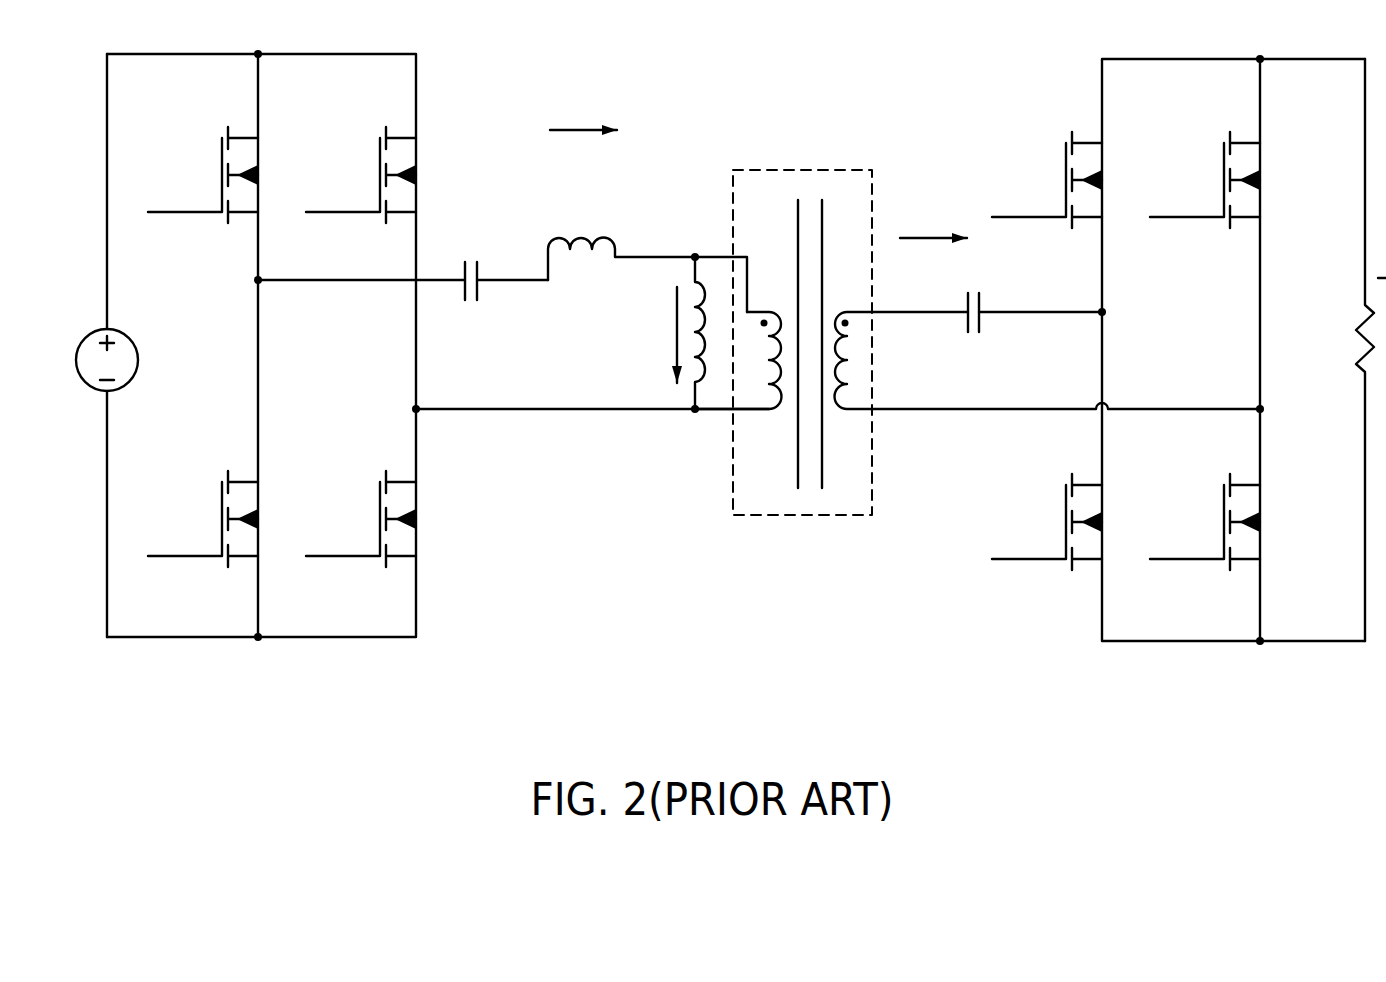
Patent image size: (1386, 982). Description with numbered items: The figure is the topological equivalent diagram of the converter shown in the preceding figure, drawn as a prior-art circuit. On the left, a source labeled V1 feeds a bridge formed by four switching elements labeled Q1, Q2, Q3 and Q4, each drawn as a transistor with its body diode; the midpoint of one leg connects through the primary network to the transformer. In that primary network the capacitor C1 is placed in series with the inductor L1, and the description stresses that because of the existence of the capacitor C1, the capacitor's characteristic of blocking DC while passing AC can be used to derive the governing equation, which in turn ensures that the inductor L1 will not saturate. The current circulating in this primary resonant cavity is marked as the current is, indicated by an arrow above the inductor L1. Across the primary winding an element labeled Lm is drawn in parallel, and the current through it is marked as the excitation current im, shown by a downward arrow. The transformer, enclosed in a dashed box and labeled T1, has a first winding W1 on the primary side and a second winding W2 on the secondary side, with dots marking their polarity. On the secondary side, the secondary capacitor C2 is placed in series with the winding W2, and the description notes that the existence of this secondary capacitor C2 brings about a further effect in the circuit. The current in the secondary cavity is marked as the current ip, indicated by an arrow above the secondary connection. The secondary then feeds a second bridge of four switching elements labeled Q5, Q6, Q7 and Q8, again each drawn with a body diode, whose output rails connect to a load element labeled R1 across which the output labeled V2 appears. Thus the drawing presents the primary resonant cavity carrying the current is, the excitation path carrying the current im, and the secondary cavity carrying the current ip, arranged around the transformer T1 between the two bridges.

The input voltage source V1 is at (82, 345).
The output voltage V2 is at (1351, 171).
The primary-side switch Q1 is at (203, 149).
The primary-side switch Q2 is at (361, 149).
The primary-side switch Q3 is at (203, 494).
The primary-side switch Q4 is at (361, 494).
The secondary-side switch Q5 is at (1047, 151).
The secondary-side switch Q6 is at (1205, 151).
The secondary-side switch Q7 is at (1047, 493).
The secondary-side switch Q8 is at (1205, 493).
The capacitor C1 is at (501, 260).
The secondary capacitor C2 is at (1035, 298).
The inductor L1 is at (621, 239).
The magnetizing inductor Lm is at (719, 333).
The transformer T1 is at (802, 316).
The primary winding W1 is at (738, 360).
The secondary winding W2 is at (1047, 360).
The load resistor R1 is at (1338, 350).
The current in the primary resonant cavity is is at (583, 147).
The current in the secondary cavity ip is at (933, 255).
The excitation current im is at (659, 335).